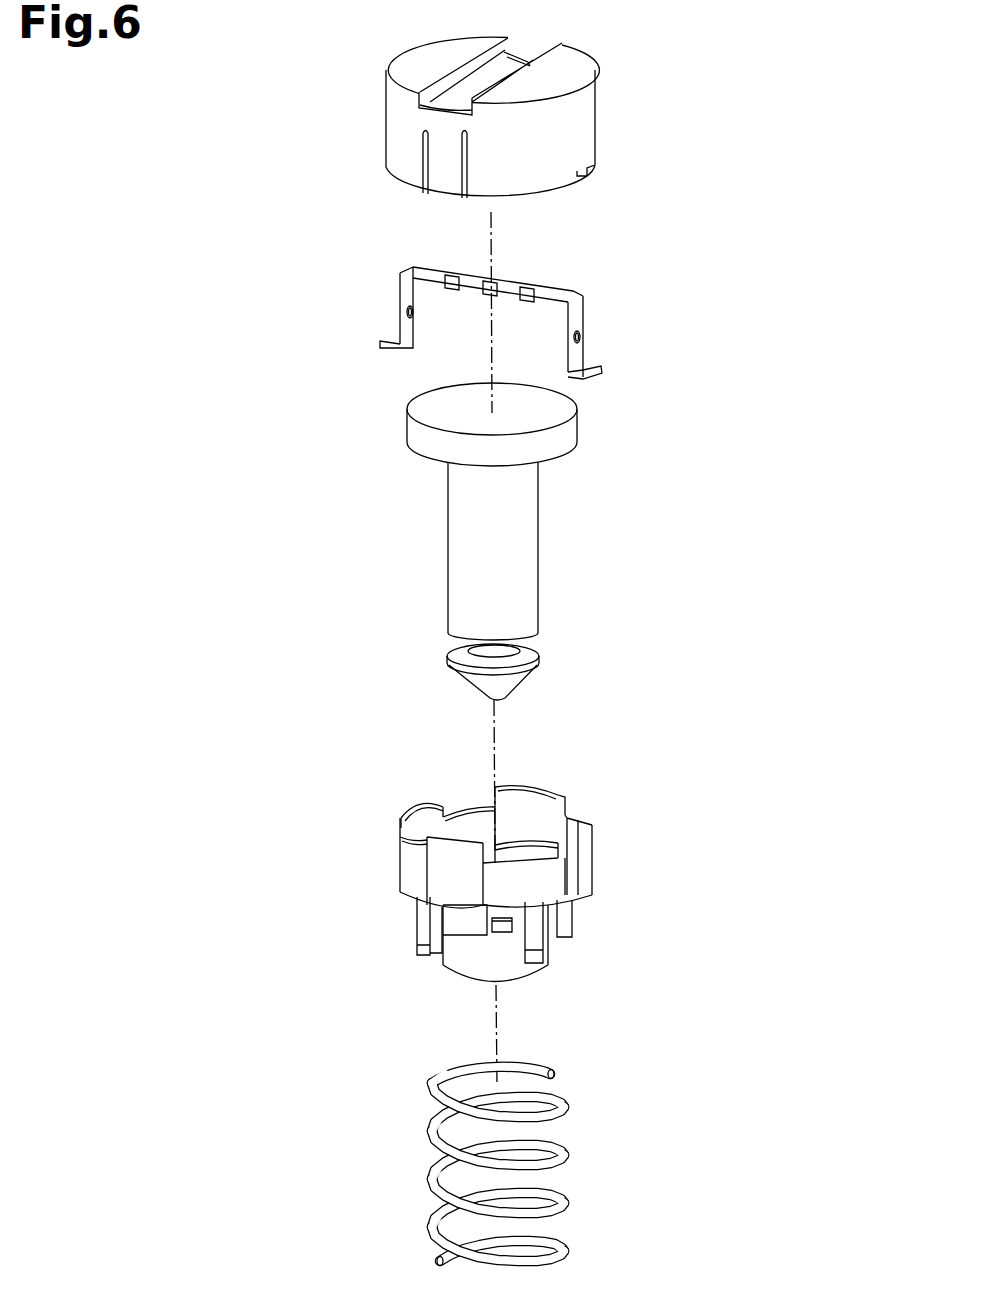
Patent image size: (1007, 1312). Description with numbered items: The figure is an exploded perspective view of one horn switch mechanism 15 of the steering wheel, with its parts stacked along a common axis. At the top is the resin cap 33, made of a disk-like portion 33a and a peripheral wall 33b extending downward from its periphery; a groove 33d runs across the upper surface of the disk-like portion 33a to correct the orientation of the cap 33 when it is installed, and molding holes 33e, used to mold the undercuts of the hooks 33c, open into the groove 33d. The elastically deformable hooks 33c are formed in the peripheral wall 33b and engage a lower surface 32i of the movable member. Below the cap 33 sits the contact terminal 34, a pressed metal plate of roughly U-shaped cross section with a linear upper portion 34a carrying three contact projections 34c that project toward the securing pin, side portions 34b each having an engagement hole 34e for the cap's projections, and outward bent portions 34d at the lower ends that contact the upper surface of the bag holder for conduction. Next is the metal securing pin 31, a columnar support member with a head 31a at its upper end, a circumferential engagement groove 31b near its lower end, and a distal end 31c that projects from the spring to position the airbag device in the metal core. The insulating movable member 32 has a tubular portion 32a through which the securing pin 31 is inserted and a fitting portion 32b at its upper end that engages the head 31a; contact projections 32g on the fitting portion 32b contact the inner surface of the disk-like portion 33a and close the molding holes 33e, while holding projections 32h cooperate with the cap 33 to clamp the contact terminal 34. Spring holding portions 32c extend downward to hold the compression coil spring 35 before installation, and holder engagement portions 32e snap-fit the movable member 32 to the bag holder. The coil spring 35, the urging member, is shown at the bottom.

The horn switch mechanism 15 is at (297, 48).
The securing pin 31 is at (447, 527).
The head 31a is at (570, 428).
The engagement groove 31b is at (540, 648).
The distal end 31c is at (497, 697).
The movable member 32 is at (400, 848).
The tubular portion 32a is at (458, 968).
The fitting portion 32b is at (407, 870).
The spring holding portions 32c is at (575, 907).
The holder engagement portions 32e is at (500, 928).
The contact projections 32g is at (470, 840).
The holding projections 32h is at (402, 803).
The lower surface 32i is at (453, 903).
The cap 33 is at (385, 123).
The disk-like portion 33a is at (402, 60).
The peripheral wall 33b is at (583, 132).
The hooks 33c is at (445, 185).
The groove 33d is at (478, 82).
The molding holes 33e is at (507, 53).
The contact terminal 34 is at (400, 295).
The upper portion 34a is at (510, 287).
The side portions 34b is at (580, 312).
The contact projections 34c is at (485, 298).
The bent portion 34d is at (597, 374).
The engagement hole 34e is at (583, 338).
The compression coil spring 35 is at (432, 1163).